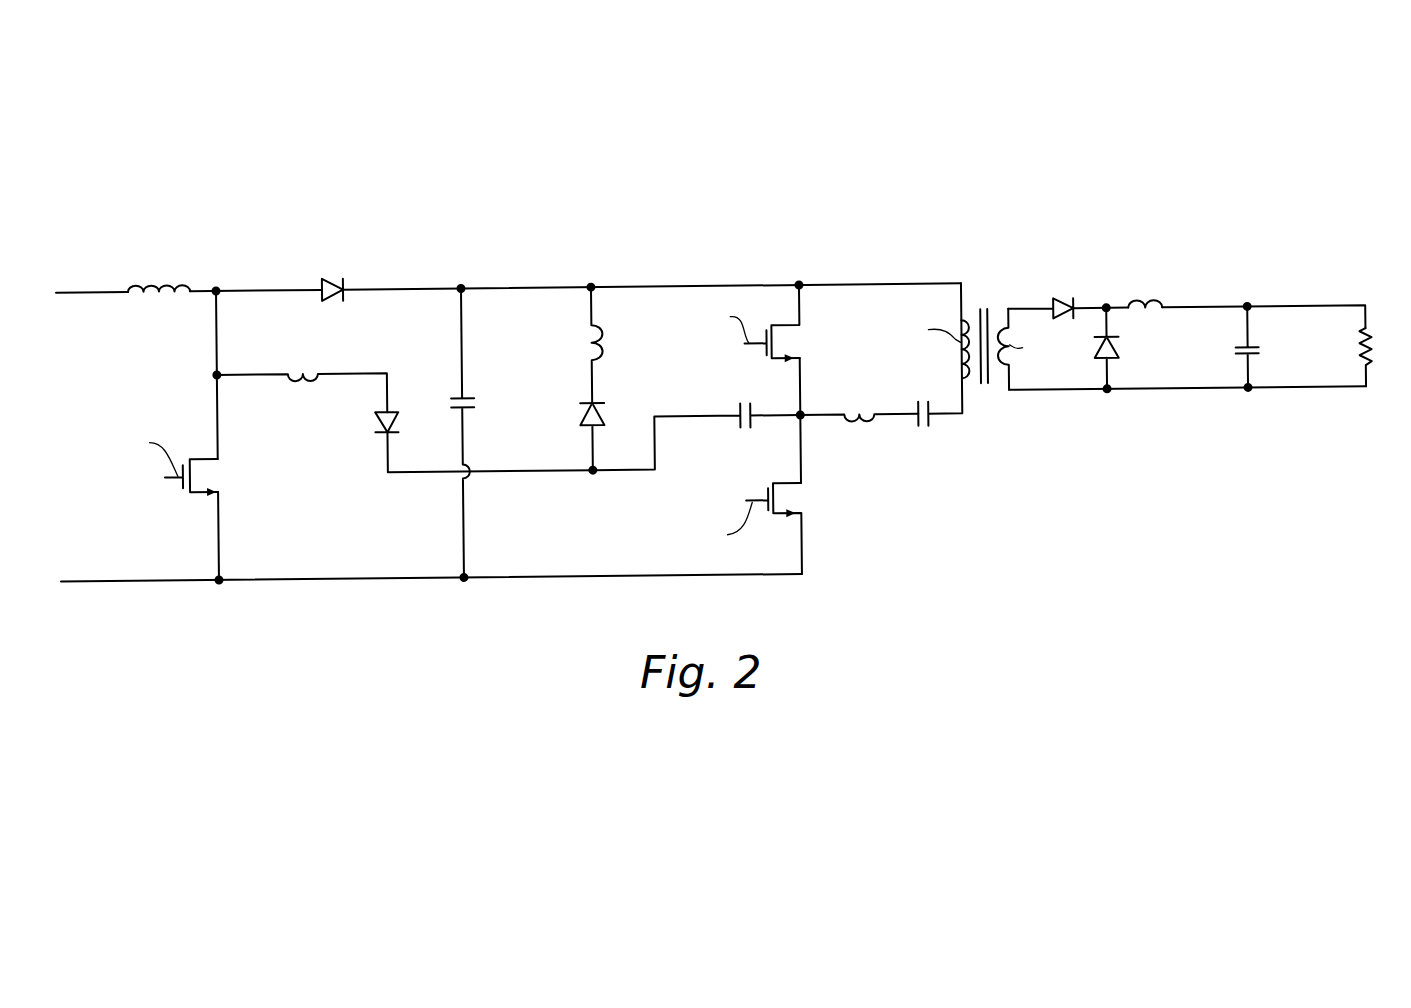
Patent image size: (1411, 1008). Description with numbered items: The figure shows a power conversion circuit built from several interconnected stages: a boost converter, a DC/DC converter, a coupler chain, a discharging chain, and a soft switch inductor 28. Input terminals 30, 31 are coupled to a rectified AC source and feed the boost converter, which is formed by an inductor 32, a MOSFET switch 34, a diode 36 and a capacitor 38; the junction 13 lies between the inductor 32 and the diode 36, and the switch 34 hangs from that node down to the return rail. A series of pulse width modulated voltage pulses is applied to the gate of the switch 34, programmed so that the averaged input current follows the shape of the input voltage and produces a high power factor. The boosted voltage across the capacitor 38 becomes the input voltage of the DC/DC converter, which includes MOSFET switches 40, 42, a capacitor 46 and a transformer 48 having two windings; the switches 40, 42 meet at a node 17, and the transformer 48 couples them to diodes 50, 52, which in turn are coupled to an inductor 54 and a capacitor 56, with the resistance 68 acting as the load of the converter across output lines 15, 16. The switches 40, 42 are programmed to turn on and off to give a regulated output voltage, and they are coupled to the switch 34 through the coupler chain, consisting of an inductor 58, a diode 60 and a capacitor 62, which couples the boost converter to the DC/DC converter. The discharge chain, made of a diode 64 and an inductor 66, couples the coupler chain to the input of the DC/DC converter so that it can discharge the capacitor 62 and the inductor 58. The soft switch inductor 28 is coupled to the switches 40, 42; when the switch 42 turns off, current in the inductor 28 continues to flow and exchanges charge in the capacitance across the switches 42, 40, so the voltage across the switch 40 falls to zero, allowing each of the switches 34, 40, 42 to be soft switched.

The node between input inductor and diode 13 is at (216, 291).
The output terminal line 15 is at (1275, 317).
The output return line 16 is at (1231, 399).
The node between transistors 17 is at (800, 424).
The soft switch inductor 28 is at (857, 419).
The input terminal 30 is at (117, 580).
The input terminal 31 is at (100, 291).
The inductor 32 is at (170, 284).
The MOSFET switch 34 is at (210, 472).
The diode 36 is at (335, 282).
The capacitor 38 is at (473, 408).
The MOSFET switch 40 is at (796, 506).
The MOSFET switch 42 is at (793, 348).
The capacitor 46 is at (923, 440).
The transformer 48 is at (982, 310).
The diode 50 is at (1063, 307).
The diode 52 is at (1118, 359).
The inductor 54 is at (1151, 312).
The capacitor 56 is at (1237, 356).
The inductor 58 is at (298, 374).
The diode 60 is at (373, 433).
The capacitor 62 is at (741, 436).
The diode 64 is at (602, 414).
The inductor 66 is at (589, 349).
The resistance 68 is at (1356, 357).